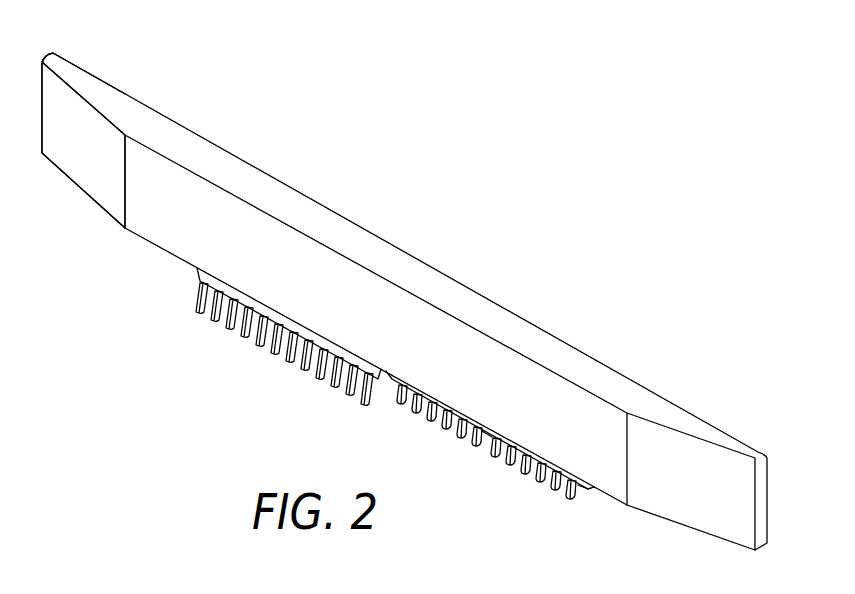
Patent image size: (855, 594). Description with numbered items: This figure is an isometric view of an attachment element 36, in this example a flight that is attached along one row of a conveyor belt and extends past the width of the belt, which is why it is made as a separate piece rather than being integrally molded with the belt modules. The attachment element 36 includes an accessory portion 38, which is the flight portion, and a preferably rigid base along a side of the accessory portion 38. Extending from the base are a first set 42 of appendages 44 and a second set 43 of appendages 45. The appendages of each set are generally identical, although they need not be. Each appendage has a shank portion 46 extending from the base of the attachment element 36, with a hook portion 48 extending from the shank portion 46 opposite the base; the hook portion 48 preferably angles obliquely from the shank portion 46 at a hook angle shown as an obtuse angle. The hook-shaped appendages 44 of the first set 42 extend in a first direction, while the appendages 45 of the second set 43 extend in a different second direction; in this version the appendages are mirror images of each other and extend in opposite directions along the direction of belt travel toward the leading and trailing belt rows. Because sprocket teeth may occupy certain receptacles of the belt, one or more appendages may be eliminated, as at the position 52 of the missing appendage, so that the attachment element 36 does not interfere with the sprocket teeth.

The attachment element 36 is at (431, 237).
The accessory portion 38 is at (157, 213).
The first set of appendages 42 is at (352, 406).
The second set of appendages 43 is at (567, 498).
The appendages 44 is at (200, 297).
The appendages 45 is at (580, 488).
The shank portion 46 is at (385, 379).
The hook portion 48 is at (358, 398).
The position of missing appendage 52 is at (485, 450).